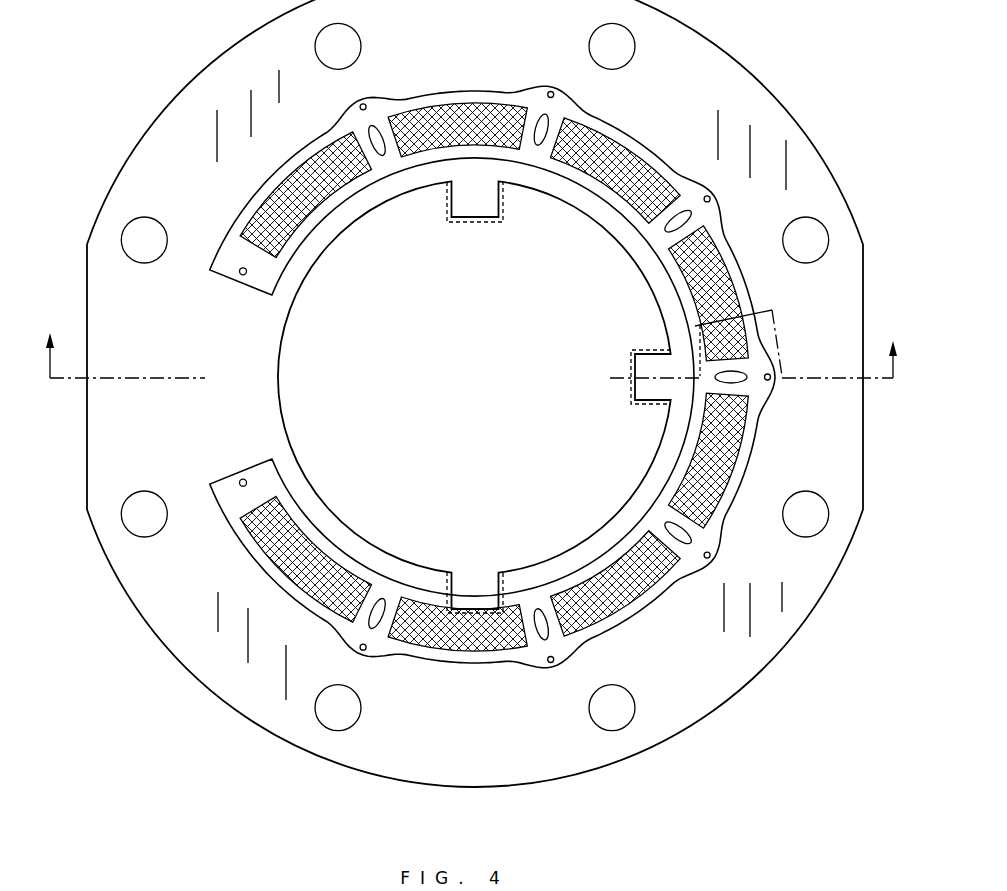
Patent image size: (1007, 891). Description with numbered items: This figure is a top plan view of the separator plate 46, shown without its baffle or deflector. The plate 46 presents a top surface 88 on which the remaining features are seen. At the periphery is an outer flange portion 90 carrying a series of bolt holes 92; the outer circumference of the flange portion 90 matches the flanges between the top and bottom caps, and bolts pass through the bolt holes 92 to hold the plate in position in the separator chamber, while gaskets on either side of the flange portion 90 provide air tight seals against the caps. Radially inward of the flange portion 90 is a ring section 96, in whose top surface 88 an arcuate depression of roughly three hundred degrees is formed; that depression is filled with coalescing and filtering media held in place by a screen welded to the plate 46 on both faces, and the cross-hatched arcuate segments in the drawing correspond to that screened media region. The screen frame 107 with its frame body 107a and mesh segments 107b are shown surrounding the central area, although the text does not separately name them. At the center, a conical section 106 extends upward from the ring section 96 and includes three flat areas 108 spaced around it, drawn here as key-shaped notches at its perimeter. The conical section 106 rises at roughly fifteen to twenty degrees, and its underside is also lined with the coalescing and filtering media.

The separator plate 46 is at (134, 648).
The top surface 88 is at (148, 477).
The outer flange portion 90 is at (221, 656).
The bolt holes 92 is at (328, 712).
The ring section 96 is at (236, 351).
The central conical section 106 is at (380, 334).
The screen assembly 107 is at (503, 86).
The screen frame 107a is at (592, 125).
The mesh segments 107b is at (468, 112).
The flat areas 108 is at (503, 203).